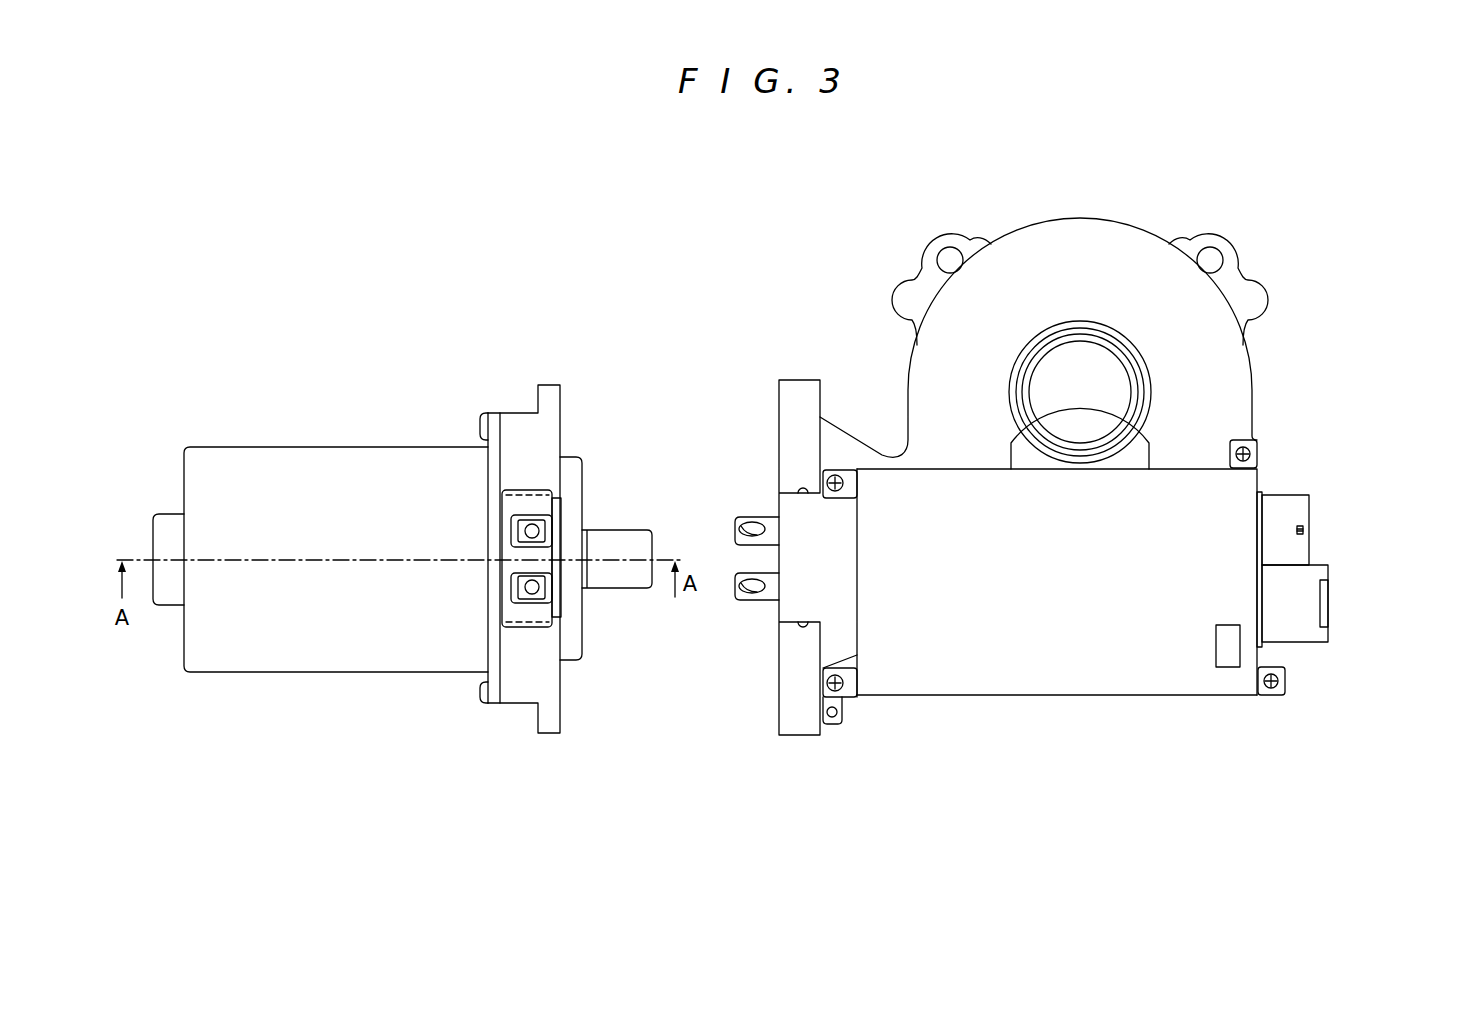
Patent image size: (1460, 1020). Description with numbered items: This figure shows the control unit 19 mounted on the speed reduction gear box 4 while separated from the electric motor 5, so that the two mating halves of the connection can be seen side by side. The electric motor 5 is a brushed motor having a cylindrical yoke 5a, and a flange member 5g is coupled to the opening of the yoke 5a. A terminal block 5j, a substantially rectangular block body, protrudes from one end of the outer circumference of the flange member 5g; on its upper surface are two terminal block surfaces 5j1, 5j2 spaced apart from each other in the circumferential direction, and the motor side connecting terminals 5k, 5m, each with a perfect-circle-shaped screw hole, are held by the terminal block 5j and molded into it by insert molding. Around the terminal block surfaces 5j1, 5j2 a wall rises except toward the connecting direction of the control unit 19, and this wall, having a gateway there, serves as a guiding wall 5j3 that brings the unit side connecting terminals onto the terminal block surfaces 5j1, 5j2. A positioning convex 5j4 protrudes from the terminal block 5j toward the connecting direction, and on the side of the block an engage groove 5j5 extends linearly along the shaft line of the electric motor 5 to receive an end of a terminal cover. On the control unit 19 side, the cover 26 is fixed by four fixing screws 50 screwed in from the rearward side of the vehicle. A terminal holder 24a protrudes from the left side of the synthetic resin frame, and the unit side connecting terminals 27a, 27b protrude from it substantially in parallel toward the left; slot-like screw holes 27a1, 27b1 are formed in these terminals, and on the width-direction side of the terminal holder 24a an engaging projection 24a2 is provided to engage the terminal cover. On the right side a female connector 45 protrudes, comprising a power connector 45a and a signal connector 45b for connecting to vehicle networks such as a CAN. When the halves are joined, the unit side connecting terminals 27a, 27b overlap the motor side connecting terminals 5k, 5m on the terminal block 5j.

The speed reduction gear box 4 is at (1086, 238).
The electric motor 5 is at (310, 443).
The cylindrical yoke 5a is at (271, 653).
The flange member 5g is at (543, 667).
The terminal block 5j is at (557, 612).
The terminal block surface 5j1 is at (518, 529).
The terminal block surface 5j2 is at (512, 580).
The guiding wall 5j3 is at (552, 547).
The positioning convex 5j4 is at (560, 511).
The engage groove 5j5 is at (524, 625).
The motor side connecting terminal 5k is at (515, 541).
The motor side connecting terminal 5m is at (515, 592).
The control unit 19 is at (1002, 703).
The terminal holder 24a is at (807, 575).
The engaging projection 24a2 is at (803, 626).
The cover 26 is at (1112, 673).
The unit side connecting terminal 27a is at (770, 522).
The slot-like screw hole 27a1 is at (739, 528).
The unit side connecting terminal 27b is at (773, 594).
The slot-like screw hole 27b1 is at (742, 588).
The female connector 45 is at (1393, 498).
The power connector 45a is at (1302, 590).
The signal connector 45b is at (1300, 512).
The fixing screws 50 is at (838, 476).